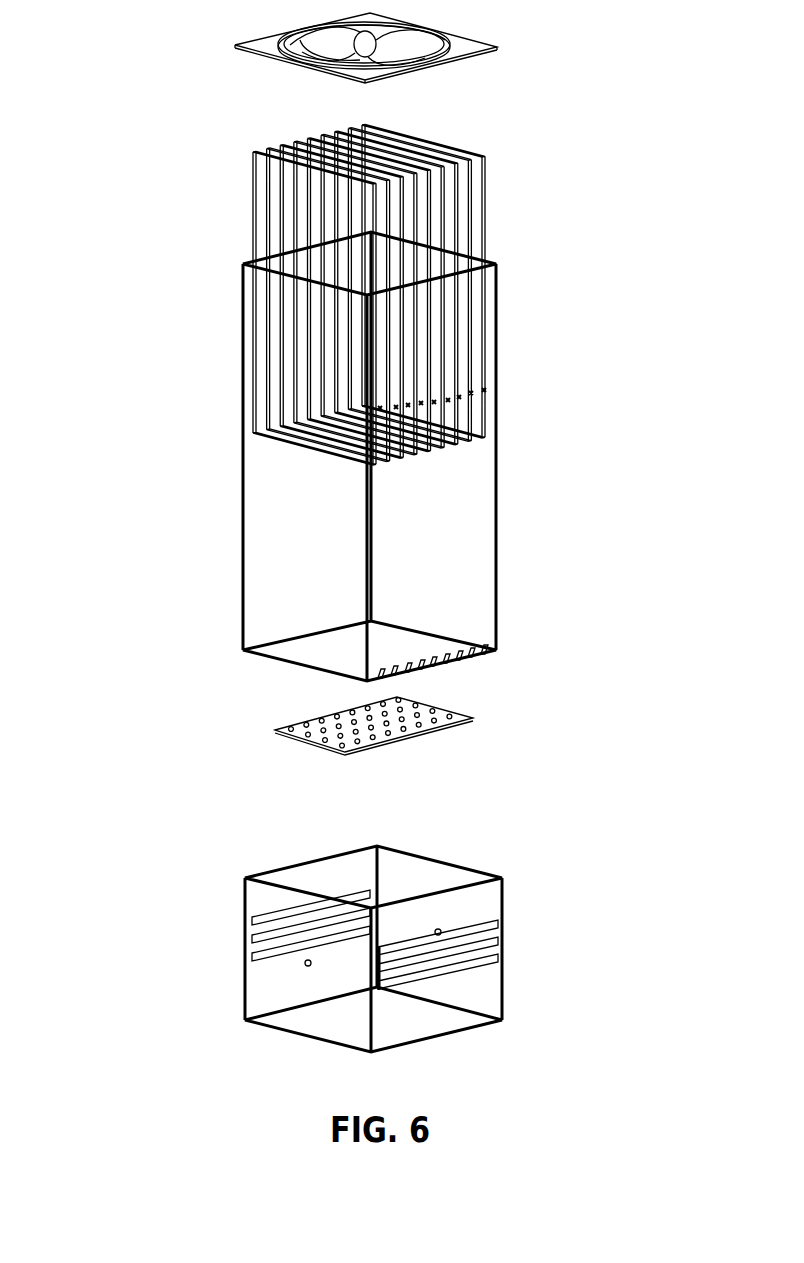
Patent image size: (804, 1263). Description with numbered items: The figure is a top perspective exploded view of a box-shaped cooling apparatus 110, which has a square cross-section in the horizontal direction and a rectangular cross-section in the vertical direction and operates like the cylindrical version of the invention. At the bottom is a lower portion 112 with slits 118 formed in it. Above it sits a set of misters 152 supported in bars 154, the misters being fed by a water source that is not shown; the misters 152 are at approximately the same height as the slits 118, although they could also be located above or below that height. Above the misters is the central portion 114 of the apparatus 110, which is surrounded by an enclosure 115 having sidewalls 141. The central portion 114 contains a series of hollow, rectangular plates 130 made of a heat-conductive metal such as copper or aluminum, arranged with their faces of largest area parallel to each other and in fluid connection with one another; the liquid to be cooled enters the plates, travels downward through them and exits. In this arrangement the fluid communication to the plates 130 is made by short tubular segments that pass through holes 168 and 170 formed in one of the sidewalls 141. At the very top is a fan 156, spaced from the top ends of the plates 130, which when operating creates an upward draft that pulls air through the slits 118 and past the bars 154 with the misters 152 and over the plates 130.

The fan 156 is at (497, 48).
The plates 130 is at (396, 294).
The holes 168 is at (498, 400).
The apparatus 110 is at (373, 457).
The central portion 114 is at (205, 487).
The enclosure 115 is at (503, 496).
The sidewalls 141 is at (458, 553).
The holes 170 is at (467, 663).
The bars 154 is at (290, 733).
The misters 152 is at (367, 726).
The lower portion 112 is at (350, 949).
The slits 118 is at (500, 945).